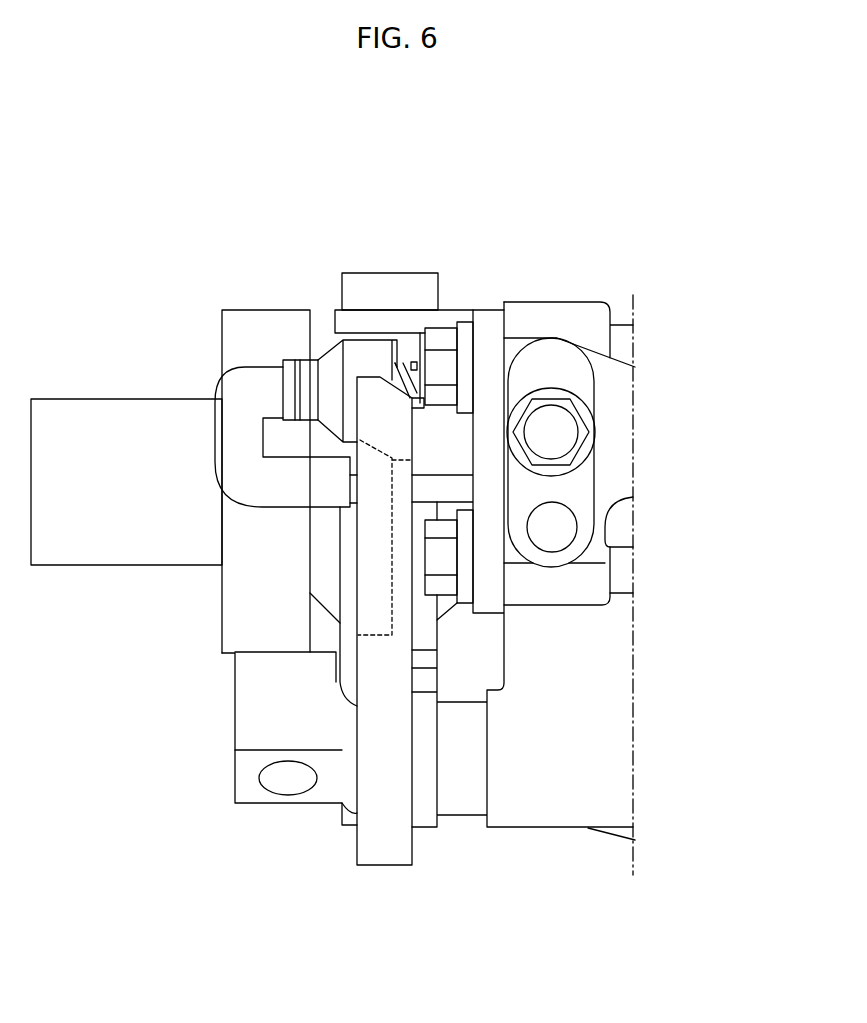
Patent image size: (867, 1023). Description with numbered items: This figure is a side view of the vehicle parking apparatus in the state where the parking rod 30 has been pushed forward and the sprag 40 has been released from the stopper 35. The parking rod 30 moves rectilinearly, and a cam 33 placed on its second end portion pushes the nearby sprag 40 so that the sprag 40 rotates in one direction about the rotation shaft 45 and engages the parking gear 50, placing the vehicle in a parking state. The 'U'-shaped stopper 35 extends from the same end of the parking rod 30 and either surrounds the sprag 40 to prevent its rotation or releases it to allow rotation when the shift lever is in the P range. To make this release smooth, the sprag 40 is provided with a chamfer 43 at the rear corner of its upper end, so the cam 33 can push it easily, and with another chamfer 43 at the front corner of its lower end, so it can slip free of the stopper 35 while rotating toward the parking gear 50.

The parking rod 30 is at (413, 363).
The cam 33 is at (362, 353).
The 'U'-shaped stopper 35 is at (237, 372).
The sprag 40 is at (373, 783).
The chamfer 43 is at (390, 378).
The rotation shaft 45 is at (465, 760).
The parking gear 50 is at (410, 287).